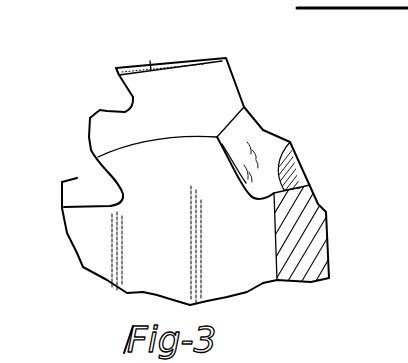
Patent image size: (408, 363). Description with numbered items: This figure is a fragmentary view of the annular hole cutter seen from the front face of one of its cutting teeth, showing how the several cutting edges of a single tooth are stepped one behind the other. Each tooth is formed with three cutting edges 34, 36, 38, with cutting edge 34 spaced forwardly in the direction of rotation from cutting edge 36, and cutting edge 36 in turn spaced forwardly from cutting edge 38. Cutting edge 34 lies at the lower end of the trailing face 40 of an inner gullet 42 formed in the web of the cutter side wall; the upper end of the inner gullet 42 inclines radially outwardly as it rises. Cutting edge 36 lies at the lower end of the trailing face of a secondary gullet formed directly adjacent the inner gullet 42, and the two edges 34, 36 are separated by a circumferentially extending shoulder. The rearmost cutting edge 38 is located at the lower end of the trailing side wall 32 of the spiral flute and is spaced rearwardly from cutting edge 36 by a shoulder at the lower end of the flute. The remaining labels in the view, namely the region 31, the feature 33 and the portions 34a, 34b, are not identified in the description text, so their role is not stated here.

The tool holder body 31 is at (170, 220).
The trailing side wall of flute 32 is at (77, 137).
The top edge surface 33 is at (214, 58).
The cutting edge 34 is at (108, 77).
The upper edge portion 34a is at (108, 76).
The lower notch portion 34b is at (128, 97).
The cutting edge 36 is at (188, 119).
The cutting edge 38 is at (177, 58).
The trailing face of inner gullet 40 is at (150, 61).
The inner gullet 42 is at (253, 138).